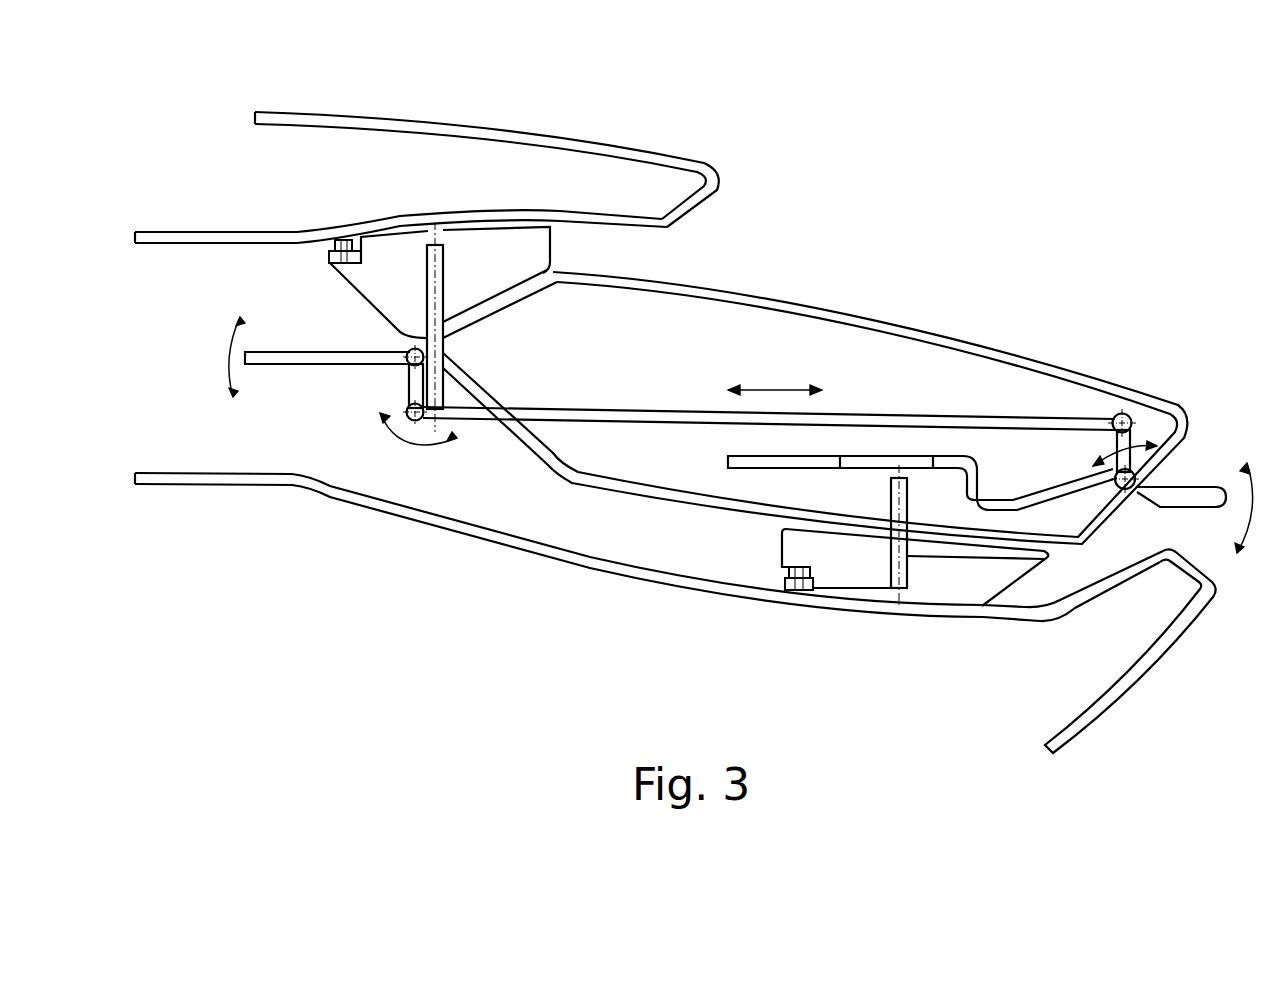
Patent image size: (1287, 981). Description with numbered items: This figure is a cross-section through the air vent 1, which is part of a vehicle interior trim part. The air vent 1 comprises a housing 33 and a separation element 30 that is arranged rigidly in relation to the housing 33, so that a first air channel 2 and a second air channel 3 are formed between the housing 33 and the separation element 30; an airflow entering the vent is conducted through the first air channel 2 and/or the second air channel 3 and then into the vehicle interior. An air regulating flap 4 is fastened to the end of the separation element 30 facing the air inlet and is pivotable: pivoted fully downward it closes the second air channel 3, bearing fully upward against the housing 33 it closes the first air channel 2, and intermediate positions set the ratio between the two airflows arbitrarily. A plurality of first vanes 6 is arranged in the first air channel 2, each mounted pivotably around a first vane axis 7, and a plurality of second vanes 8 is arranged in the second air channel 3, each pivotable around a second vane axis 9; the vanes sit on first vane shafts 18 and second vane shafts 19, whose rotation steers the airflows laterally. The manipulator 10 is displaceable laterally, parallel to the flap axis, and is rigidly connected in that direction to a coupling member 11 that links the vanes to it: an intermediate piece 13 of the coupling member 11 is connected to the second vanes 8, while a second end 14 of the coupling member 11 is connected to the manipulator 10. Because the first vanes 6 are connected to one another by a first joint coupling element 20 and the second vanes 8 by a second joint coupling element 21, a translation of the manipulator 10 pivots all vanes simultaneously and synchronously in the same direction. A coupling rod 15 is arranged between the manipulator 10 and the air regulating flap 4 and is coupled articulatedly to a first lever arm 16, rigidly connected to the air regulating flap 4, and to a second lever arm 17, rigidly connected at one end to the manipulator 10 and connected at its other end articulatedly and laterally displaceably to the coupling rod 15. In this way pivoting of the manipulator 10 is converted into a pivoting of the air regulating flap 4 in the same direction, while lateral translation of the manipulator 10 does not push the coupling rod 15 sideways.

The air vent 1 is at (828, 102).
The first air channel 2 is at (660, 242).
The second air channel 3 is at (1097, 584).
The air regulating flap 4 is at (300, 368).
The first vanes 6 is at (553, 243).
The first vane axis 7 is at (427, 272).
The second vanes 8 is at (981, 607).
The second vane axis 9 is at (900, 588).
The manipulator 10 is at (1193, 490).
The coupling member 11 is at (728, 464).
The intermediate piece 13 is at (950, 460).
The second end 14 is at (1088, 478).
The coupling rod 15 is at (628, 410).
The first lever arm 16 is at (410, 383).
The second lever arm 17 is at (1132, 425).
The first vane shafts 18 is at (433, 262).
The second vane shafts 19 is at (887, 495).
The first joint coupling element 20 is at (333, 240).
The second joint coupling element 21 is at (782, 577).
The separation element 30 is at (873, 320).
The housing 33 is at (590, 138).